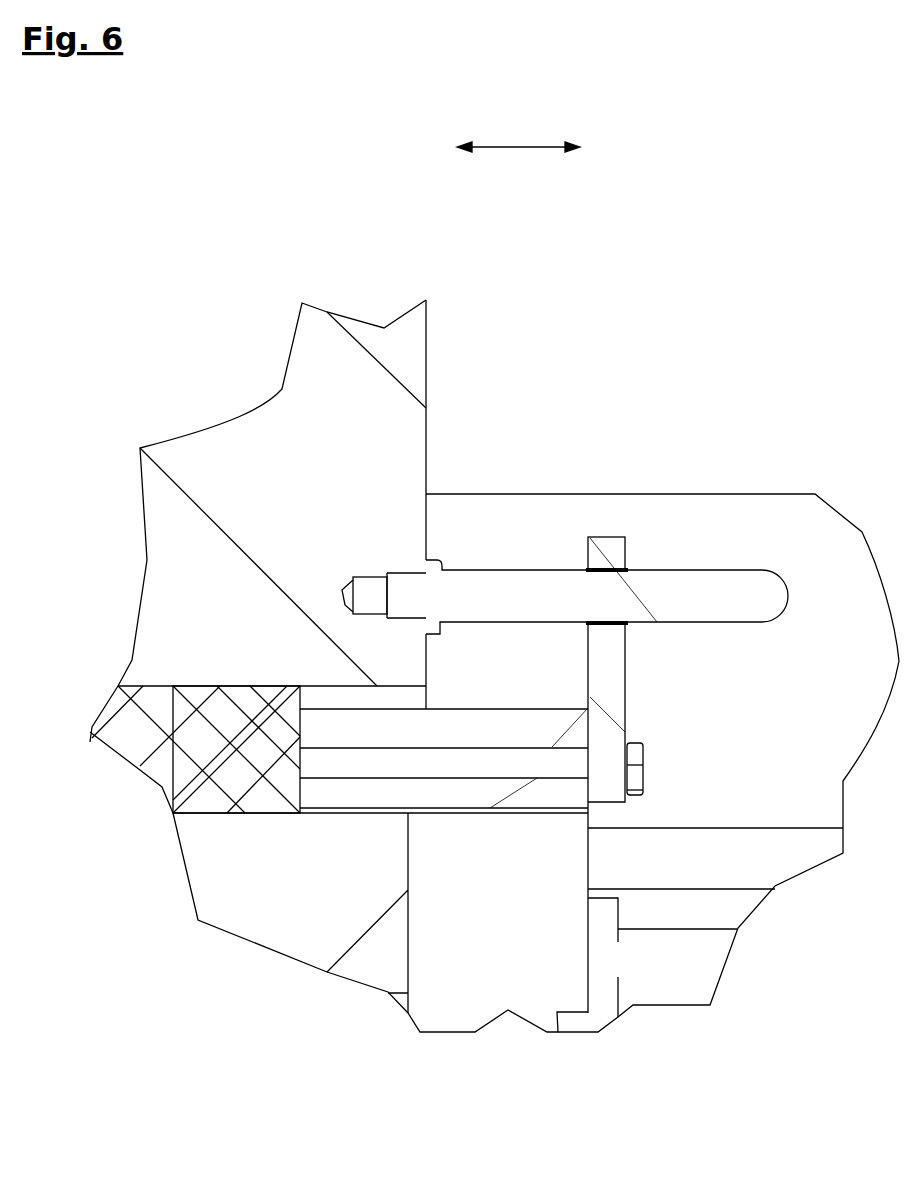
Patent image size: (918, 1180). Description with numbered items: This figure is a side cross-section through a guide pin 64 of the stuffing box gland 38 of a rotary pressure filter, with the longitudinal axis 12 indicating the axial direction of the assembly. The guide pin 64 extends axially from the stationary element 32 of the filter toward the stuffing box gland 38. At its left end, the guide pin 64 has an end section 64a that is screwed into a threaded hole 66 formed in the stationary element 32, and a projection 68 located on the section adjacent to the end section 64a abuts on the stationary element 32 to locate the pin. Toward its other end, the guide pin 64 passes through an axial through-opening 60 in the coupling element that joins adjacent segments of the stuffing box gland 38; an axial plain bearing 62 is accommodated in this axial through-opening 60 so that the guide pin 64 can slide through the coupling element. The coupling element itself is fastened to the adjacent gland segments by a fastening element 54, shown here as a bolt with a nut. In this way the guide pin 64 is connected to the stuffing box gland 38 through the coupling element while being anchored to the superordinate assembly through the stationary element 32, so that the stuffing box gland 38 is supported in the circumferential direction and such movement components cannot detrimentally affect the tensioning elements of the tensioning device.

The longitudinal axis 12 is at (518, 133).
The stationary element 32 is at (272, 493).
The stuffing box gland 38 is at (430, 718).
The fastening element 54 is at (607, 698).
The axial through-opening 60 is at (622, 573).
The axial plain bearing 62 is at (627, 632).
The guide pin 64 is at (607, 597).
The end section of the guide pin 64a is at (407, 595).
The threaded hole 66 is at (360, 585).
The projection 68 is at (435, 567).